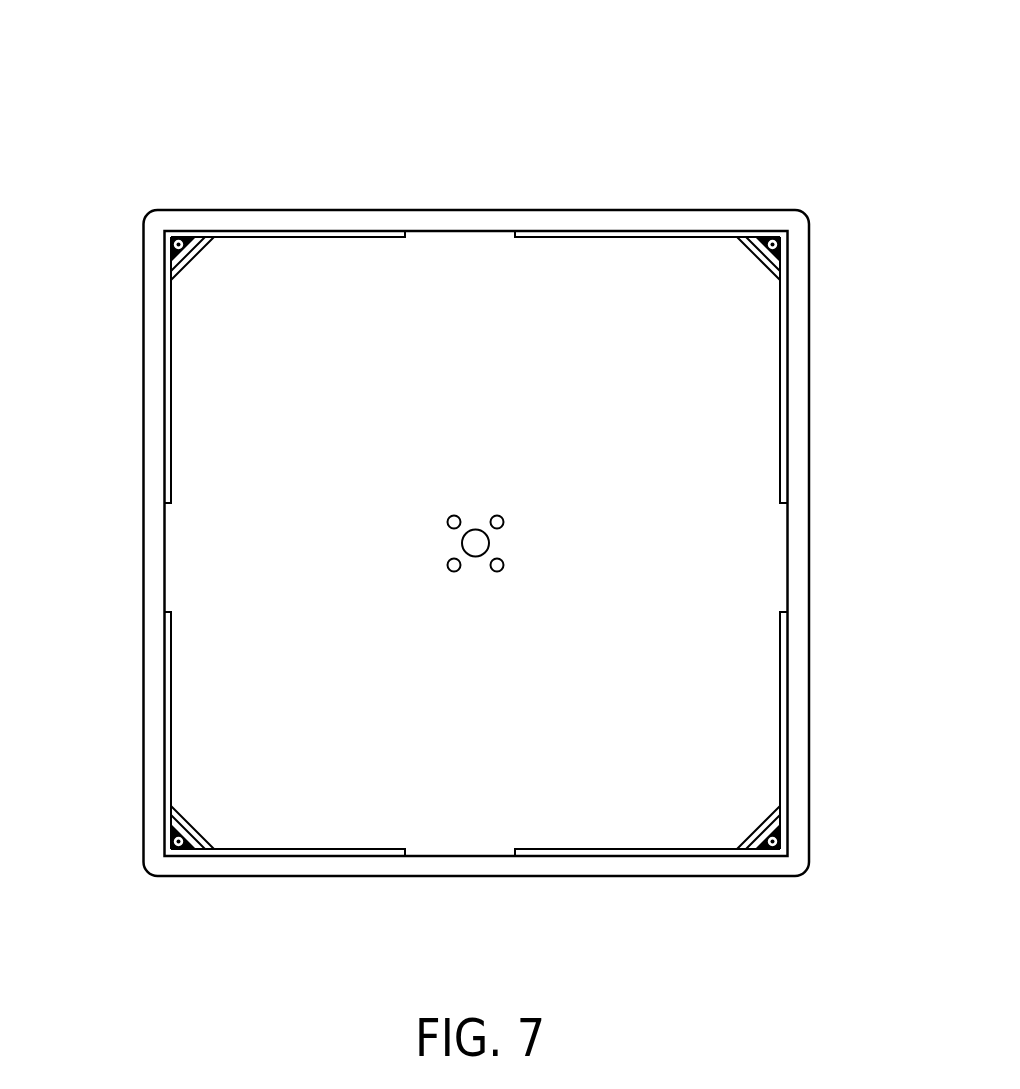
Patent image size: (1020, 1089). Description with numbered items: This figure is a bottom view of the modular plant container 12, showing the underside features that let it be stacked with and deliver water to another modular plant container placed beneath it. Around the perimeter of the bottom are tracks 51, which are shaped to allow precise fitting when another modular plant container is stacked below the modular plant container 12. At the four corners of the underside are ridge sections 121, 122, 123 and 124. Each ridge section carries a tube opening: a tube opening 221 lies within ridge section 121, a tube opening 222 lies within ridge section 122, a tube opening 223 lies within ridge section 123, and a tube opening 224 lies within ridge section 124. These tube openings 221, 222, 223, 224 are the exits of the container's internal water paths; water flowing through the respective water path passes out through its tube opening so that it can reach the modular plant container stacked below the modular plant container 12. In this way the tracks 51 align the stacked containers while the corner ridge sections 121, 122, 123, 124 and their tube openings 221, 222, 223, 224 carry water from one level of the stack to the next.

The modular plant container 12 is at (708, 60).
The tracks 51 is at (171, 372).
The ridge section 121 is at (764, 232).
The ridge section 122 is at (188, 232).
The ridge section 123 is at (187, 854).
The ridge section 124 is at (764, 854).
The tube opening 221 is at (779, 252).
The tube opening 222 is at (172, 250).
The tube opening 223 is at (172, 836).
The tube opening 224 is at (779, 838).